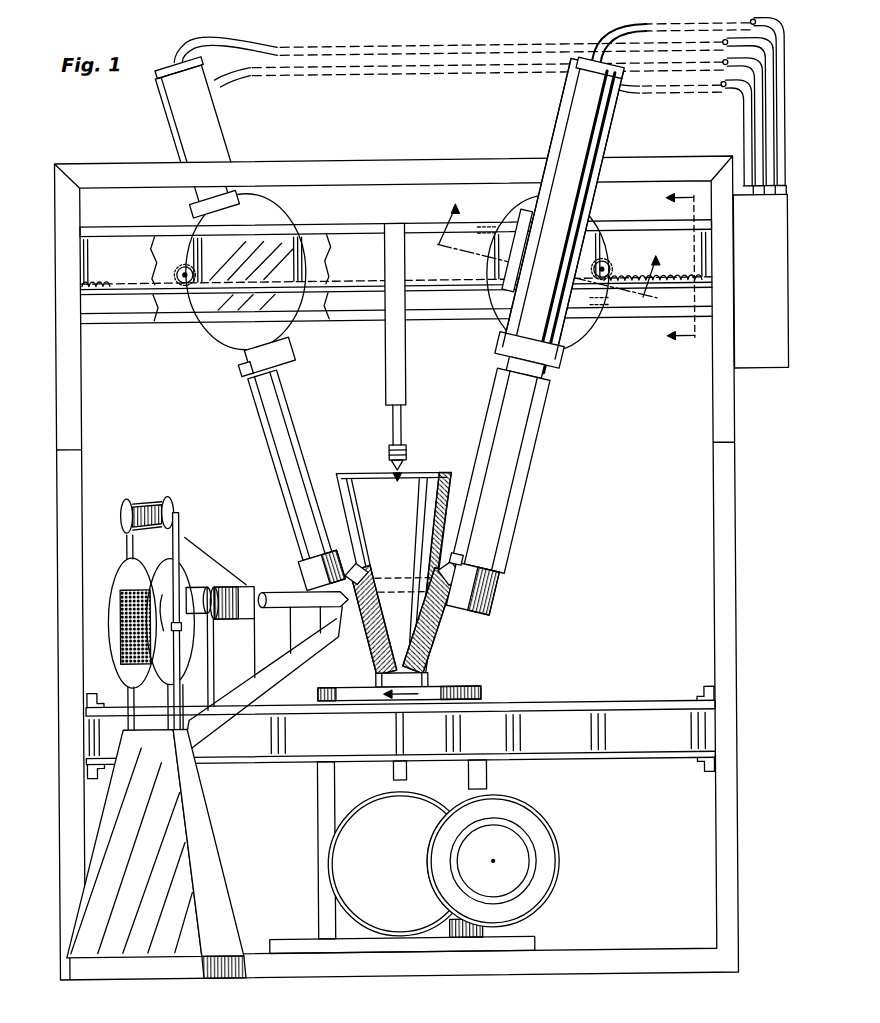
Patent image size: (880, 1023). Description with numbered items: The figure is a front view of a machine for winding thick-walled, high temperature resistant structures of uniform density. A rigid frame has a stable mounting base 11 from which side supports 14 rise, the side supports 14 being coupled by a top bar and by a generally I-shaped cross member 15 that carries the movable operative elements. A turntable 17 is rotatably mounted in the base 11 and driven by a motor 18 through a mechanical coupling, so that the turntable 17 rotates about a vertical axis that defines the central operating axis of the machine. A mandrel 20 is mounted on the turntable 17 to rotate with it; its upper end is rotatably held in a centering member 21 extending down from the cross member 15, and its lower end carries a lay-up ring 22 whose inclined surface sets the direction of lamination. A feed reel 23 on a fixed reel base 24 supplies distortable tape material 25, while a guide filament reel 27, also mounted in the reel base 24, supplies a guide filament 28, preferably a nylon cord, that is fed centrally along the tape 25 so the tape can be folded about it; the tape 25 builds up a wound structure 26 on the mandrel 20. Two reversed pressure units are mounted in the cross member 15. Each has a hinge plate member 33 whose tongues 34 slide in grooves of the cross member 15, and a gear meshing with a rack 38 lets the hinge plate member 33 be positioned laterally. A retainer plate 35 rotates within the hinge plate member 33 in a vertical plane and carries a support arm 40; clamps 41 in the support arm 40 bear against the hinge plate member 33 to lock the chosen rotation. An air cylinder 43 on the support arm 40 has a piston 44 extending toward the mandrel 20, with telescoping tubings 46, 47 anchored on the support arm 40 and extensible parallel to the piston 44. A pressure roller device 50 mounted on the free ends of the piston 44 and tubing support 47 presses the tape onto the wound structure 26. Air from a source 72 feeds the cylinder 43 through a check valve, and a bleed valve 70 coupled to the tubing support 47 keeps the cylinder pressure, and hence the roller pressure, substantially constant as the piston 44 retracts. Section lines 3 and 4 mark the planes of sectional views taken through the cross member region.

The section line 3- 3 is at (671, 265).
The section line 4- 4 is at (551, 241).
The mounting base 11 is at (640, 761).
The side supports 14 is at (58, 634).
The cross member 15 is at (364, 223).
The turntable 17 is at (472, 687).
The motor 18 is at (547, 827).
The mandrel 20 is at (428, 473).
The centering member 21 is at (390, 454).
The lay-up ring 22 is at (372, 678).
The feed reel 23 is at (116, 582).
The reel base 24 is at (130, 843).
The tape material 25 is at (147, 574).
The wound structure 26 is at (432, 640).
The guide filament reel 27 is at (130, 496).
The guide filament 28 is at (203, 553).
The hinge plate member 33 is at (571, 345).
The tongues 34 is at (592, 225).
The retainer plate 35 is at (605, 313).
The rack 38 is at (396, 276).
The support arm 40 is at (230, 116).
The clamps 41 is at (205, 211).
The air cylinder 43 is at (560, 138).
The piston 44 is at (291, 408).
The telescoping tubing 46 is at (606, 137).
The tubing support 47 is at (270, 449).
The pressure roller device 50 is at (295, 578).
The bleed valve 70 is at (591, 62).
The air pressure source 72 is at (772, 268).